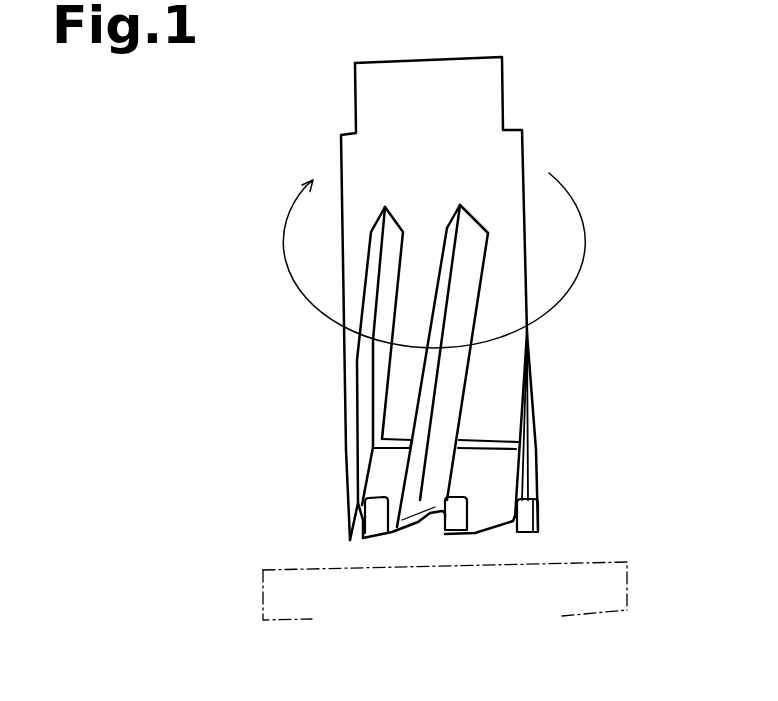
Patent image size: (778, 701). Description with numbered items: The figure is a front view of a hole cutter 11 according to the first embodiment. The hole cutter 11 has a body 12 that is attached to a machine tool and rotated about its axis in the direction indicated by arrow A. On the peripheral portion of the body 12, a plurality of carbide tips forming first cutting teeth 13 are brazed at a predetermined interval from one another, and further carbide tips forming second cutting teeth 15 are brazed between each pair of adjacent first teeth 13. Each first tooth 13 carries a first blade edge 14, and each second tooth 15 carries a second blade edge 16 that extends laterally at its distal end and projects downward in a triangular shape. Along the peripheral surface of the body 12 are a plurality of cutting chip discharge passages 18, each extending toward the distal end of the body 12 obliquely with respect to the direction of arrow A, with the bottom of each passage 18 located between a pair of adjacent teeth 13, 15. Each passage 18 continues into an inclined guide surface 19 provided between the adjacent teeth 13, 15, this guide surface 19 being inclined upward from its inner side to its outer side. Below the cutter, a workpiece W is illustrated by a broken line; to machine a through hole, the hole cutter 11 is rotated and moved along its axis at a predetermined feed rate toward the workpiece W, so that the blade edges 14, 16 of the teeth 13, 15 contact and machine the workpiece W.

The hole cutter 11 is at (548, 96).
The body 12 is at (523, 139).
The first cutting teeth 13 is at (429, 526).
The first blade edge 14 is at (446, 540).
The second cutting teeth 15 is at (350, 540).
The second blade edge 16 is at (361, 540).
The cutting chip discharge passages 18 is at (398, 215).
The inclined guide surface 19 is at (352, 509).
The rotation direction arrow A is at (286, 218).
The workpiece W is at (630, 587).